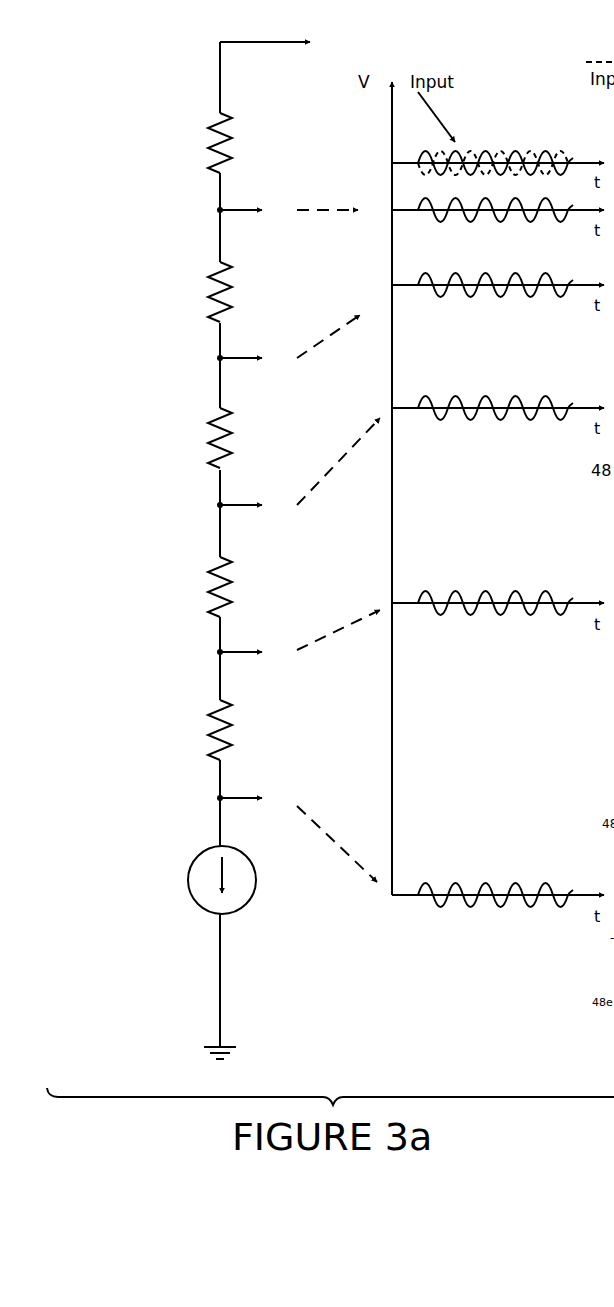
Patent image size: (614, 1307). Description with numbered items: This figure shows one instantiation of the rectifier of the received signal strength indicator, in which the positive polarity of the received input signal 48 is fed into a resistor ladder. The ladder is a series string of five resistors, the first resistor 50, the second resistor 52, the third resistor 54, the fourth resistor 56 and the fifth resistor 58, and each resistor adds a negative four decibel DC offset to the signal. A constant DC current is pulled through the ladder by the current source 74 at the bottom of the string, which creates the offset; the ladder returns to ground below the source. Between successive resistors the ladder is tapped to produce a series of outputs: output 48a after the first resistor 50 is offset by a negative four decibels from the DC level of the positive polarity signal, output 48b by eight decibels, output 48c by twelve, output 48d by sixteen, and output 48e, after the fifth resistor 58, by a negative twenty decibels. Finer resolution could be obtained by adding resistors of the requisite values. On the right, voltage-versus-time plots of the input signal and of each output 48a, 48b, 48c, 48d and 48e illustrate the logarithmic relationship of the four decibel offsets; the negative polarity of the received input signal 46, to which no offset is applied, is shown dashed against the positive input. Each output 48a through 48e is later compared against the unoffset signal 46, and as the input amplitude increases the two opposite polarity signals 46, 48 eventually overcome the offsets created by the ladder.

The negative polarity of the received input signal 46 is at (608, 84).
The positive polarity of the received input signal 48 is at (437, 110).
The output 48a is at (245, 210).
The output 48b is at (245, 358).
The output 48c is at (245, 505).
The output 48d is at (245, 652).
The output 48e is at (245, 798).
The resistor R1 50 is at (219, 118).
The resistor R2 52 is at (209, 277).
The resistor R3 54 is at (209, 423).
The resistor R4 56 is at (209, 572).
The resistor R5 58 is at (209, 715).
The current source Ic 74 is at (192, 897).